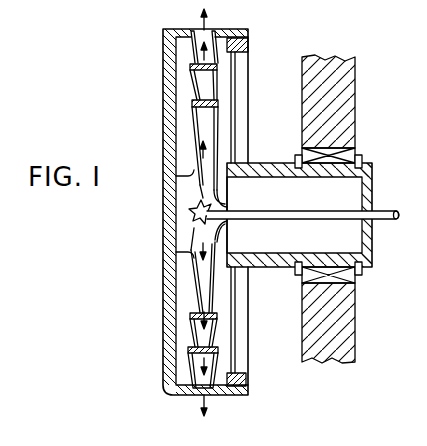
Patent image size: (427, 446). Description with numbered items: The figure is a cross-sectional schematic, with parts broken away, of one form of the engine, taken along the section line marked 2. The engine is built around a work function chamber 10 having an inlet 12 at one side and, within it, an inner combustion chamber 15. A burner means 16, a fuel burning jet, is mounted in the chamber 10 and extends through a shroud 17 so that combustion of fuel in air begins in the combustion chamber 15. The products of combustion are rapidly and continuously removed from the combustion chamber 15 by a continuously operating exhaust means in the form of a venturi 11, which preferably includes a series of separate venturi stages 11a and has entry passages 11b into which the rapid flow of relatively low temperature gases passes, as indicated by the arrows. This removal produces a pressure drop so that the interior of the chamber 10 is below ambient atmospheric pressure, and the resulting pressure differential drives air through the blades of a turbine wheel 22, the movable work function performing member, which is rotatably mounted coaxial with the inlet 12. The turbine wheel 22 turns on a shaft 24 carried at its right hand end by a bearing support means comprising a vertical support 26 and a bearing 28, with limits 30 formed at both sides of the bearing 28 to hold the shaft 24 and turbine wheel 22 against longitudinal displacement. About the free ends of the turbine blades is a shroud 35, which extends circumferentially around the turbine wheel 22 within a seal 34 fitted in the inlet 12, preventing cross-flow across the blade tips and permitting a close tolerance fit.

The section line 2- 2 is at (275, 95).
The work function chamber 10 is at (155, 116).
The venturi 11 is at (181, 60).
The venturi stages 11a is at (195, 334).
The entry passages 11b is at (224, 91).
The inlet 12 is at (232, 40).
The combustion chamber 15 is at (184, 240).
The burner means 16 is at (308, 197).
The shroud 17 is at (223, 236).
The turbine wheel 22 is at (251, 139).
The shaft 24 is at (224, 338).
The vertical support 26 is at (348, 110).
The bearing 28 is at (347, 155).
The limits 30 is at (360, 272).
The seal 34 is at (280, 379).
The shroud 35 is at (249, 372).